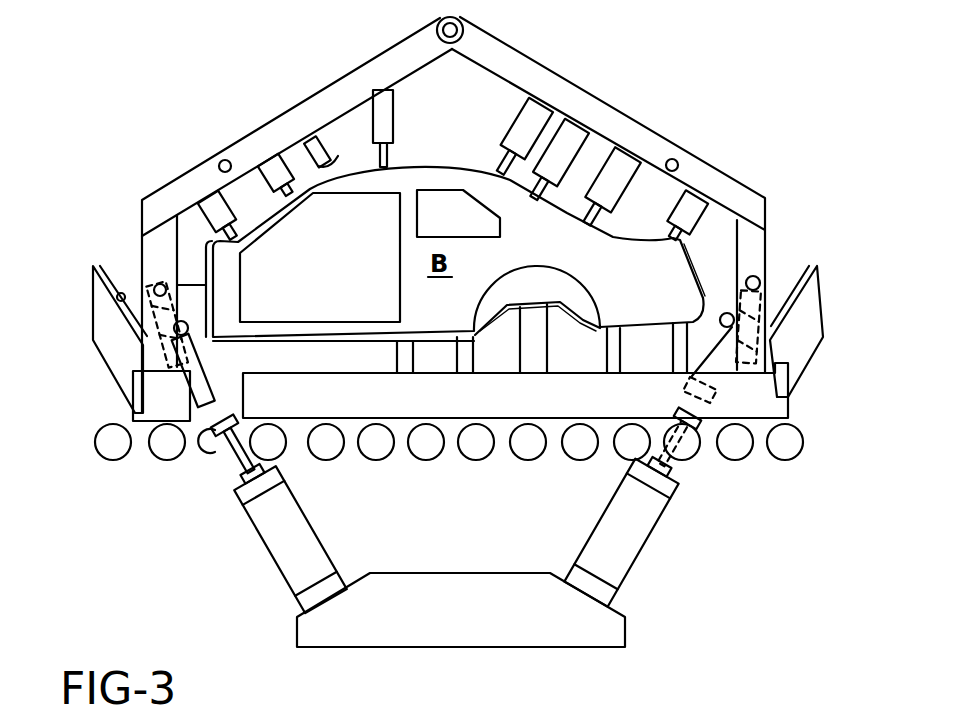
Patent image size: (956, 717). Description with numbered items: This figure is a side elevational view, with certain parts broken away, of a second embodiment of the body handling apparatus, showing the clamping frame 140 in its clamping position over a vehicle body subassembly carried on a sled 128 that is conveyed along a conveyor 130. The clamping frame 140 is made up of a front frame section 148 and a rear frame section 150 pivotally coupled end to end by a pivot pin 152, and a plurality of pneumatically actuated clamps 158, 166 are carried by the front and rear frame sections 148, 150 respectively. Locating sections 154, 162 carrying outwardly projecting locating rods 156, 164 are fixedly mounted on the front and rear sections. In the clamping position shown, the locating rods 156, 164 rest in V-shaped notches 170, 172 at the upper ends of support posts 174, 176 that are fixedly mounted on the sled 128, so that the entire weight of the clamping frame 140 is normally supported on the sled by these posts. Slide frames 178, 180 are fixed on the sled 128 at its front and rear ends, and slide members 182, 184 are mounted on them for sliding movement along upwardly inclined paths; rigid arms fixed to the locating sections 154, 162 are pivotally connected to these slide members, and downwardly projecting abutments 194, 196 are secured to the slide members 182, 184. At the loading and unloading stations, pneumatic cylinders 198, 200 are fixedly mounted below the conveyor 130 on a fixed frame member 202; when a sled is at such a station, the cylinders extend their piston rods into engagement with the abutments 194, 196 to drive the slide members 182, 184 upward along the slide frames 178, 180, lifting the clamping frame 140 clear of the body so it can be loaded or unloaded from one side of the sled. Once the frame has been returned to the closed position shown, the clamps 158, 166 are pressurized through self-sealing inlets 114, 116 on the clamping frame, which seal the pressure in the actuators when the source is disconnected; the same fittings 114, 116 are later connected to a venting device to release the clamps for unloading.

The self-sealing inlet 114 is at (222, 161).
The self-sealing inlet 116 is at (675, 160).
The sled 128 is at (407, 414).
The conveyor 130 is at (152, 468).
The clamping frame 140 is at (453, 126).
The front frame section 148 is at (287, 118).
The rear frame section 150 is at (590, 105).
The pivot pin 152 is at (438, 22).
The locating section 154 is at (147, 240).
The locating rod 156 is at (155, 286).
The pneumatically actuated clamps 158 is at (320, 158).
The locating section 162 is at (758, 244).
The locating rod 164 is at (747, 281).
The pneumatically actuated clamps 166 is at (620, 166).
The V-shaped notch 170 is at (208, 285).
The V-shaped notch 172 is at (700, 280).
The support post 174 is at (153, 342).
The support post 176 is at (768, 308).
The slide frame 178 is at (97, 303).
The slide frame 180 is at (792, 278).
The slide member 182 is at (190, 326).
The slide member 184 is at (726, 331).
The abutment 194 is at (210, 368).
The abutment 196 is at (730, 345).
The pneumatic cylinder 198 is at (290, 568).
The pneumatic cylinder 200 is at (633, 553).
The fixed frame member 202 is at (487, 619).